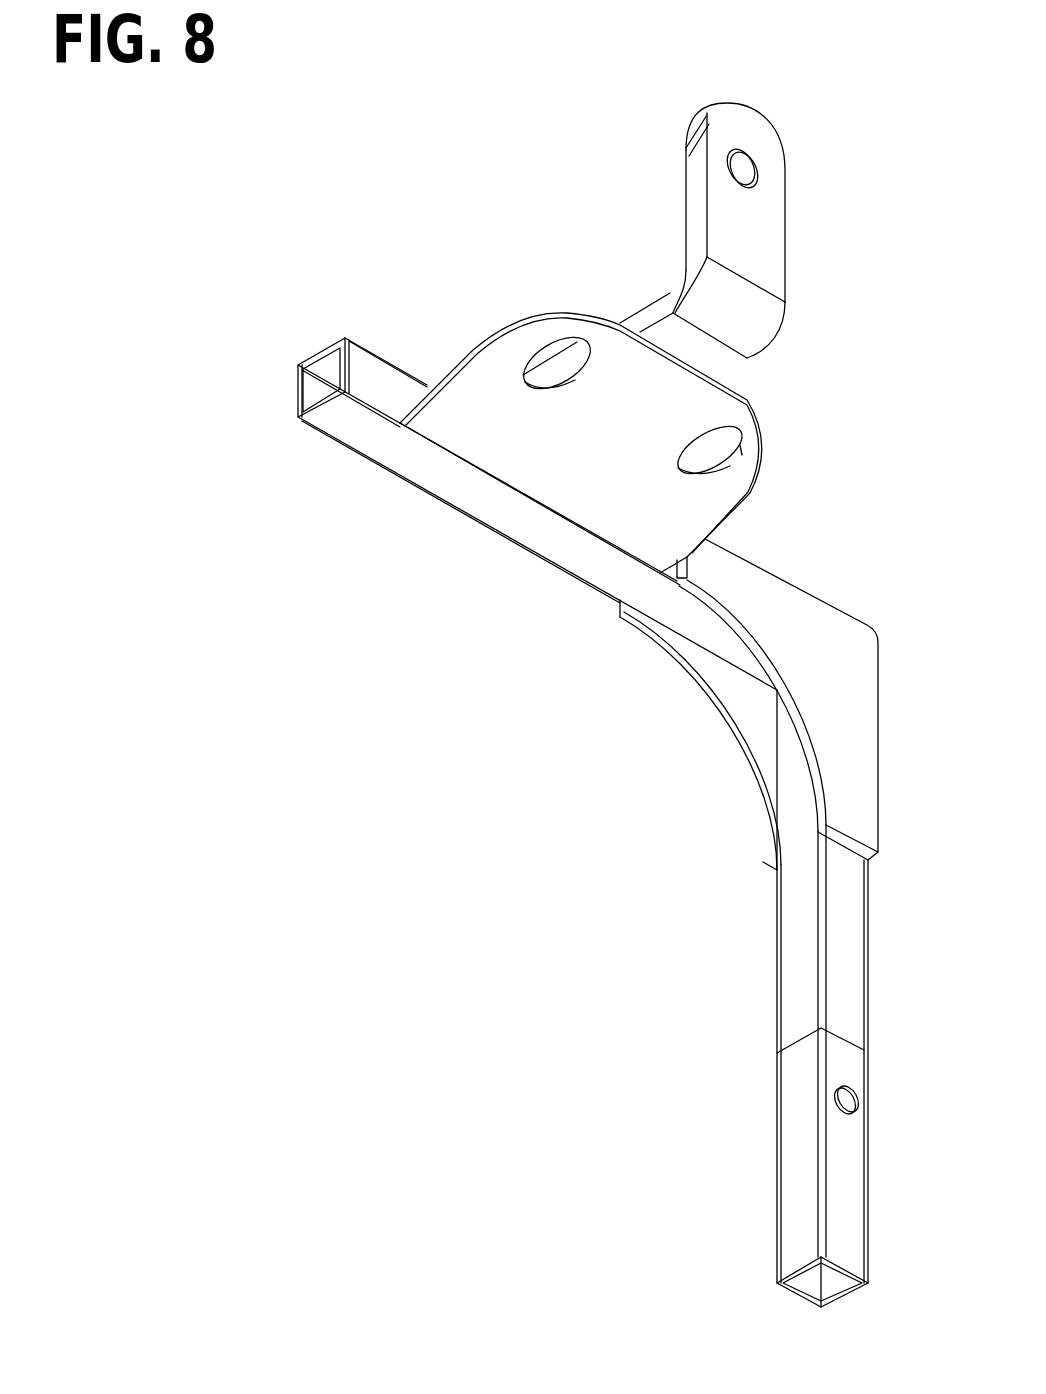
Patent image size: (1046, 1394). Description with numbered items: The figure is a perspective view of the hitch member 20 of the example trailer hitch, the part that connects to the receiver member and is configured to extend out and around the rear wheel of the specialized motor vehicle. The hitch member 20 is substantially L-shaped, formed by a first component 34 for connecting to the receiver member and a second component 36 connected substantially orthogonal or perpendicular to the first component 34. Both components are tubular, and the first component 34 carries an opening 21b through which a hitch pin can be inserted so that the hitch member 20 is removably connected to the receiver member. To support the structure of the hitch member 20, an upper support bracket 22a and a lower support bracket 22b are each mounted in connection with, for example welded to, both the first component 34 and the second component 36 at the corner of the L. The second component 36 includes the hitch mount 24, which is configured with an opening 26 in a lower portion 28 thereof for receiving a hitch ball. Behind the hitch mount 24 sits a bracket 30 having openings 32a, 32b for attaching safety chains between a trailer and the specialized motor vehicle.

The hitch member 20 is at (428, 773).
The opening 21b is at (848, 1088).
The upper support bracket 22a is at (736, 737).
The lower support bracket 22b is at (780, 573).
The hitch mount 24 is at (642, 307).
The opening 26 is at (757, 188).
The lower portion 28 is at (685, 185).
The bracket 30 is at (747, 400).
The opening 32a is at (545, 342).
The opening 32b is at (724, 463).
The first component 34 is at (776, 968).
The second component 36 is at (348, 341).